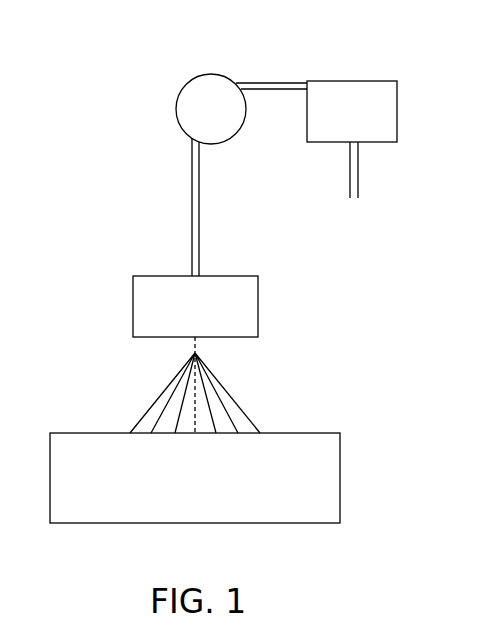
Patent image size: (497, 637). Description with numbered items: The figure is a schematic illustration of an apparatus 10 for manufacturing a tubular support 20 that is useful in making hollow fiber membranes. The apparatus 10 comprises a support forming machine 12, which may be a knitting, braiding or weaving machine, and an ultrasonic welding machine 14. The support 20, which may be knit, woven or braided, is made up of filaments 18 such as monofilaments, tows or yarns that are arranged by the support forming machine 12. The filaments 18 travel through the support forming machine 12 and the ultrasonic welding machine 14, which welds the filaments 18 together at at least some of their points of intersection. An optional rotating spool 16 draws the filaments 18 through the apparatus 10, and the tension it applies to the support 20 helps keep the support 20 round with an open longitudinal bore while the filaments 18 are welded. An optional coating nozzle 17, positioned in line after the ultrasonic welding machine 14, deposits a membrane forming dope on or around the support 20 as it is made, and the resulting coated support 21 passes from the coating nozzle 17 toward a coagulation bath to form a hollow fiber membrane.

The apparatus 10 is at (118, 181).
The support forming machine 12 is at (327, 482).
The ultrasonic welding machine 14 is at (248, 308).
The rotating spool 16 is at (210, 98).
The coating nozzle 17 is at (380, 97).
The filaments 18 is at (247, 398).
The support 20 is at (288, 80).
The coated support 21 is at (362, 177).